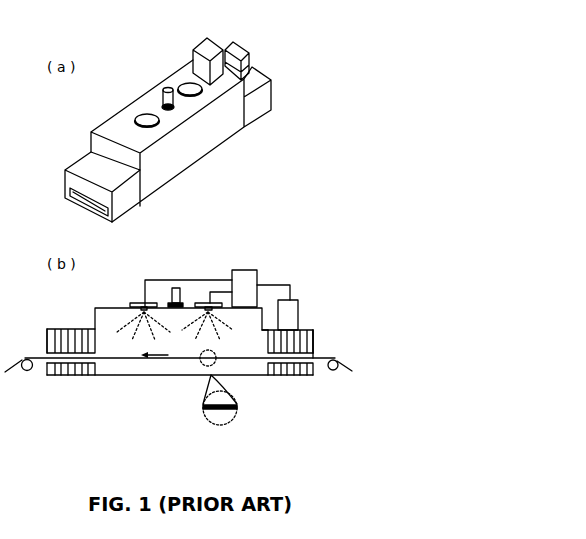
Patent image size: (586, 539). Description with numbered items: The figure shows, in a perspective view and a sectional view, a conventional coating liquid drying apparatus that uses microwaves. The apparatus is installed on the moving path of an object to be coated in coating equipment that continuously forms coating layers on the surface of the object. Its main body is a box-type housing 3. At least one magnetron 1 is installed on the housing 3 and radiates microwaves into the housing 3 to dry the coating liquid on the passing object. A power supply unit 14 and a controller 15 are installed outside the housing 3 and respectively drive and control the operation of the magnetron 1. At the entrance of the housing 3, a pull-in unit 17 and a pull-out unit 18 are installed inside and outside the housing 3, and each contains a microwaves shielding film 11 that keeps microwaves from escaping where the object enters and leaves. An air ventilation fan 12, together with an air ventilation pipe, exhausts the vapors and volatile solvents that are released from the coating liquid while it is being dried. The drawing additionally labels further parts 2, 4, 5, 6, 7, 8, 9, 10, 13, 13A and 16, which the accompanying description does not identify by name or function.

The magnetron 1 is at (166, 89).
The pin 2 is at (175, 287).
The housing 3 is at (90, 122).
The outlet 4 is at (320, 349).
The inlet 5 is at (41, 344).
The outlet roller 6 is at (313, 363).
The inlet slot 7 is at (102, 208).
The outlet wall 8 is at (318, 334).
The inlet block 9 is at (72, 180).
The housing top 10 is at (183, 73).
The microwaves shielding film 11 is at (282, 337).
The air ventilation fan 12 is at (185, 303).
The substrate 13 is at (165, 362).
The substrate component 13A is at (238, 407).
The power supply unit 14 is at (214, 46).
The controller 15 is at (243, 50).
The outlet fins 16 is at (305, 329).
The pull-in unit 17 is at (295, 381).
The pull-out unit 18 is at (72, 381).